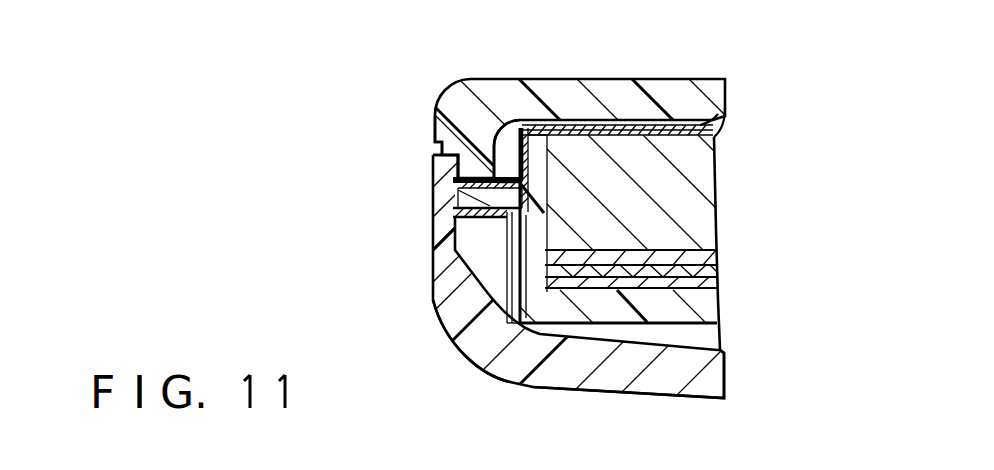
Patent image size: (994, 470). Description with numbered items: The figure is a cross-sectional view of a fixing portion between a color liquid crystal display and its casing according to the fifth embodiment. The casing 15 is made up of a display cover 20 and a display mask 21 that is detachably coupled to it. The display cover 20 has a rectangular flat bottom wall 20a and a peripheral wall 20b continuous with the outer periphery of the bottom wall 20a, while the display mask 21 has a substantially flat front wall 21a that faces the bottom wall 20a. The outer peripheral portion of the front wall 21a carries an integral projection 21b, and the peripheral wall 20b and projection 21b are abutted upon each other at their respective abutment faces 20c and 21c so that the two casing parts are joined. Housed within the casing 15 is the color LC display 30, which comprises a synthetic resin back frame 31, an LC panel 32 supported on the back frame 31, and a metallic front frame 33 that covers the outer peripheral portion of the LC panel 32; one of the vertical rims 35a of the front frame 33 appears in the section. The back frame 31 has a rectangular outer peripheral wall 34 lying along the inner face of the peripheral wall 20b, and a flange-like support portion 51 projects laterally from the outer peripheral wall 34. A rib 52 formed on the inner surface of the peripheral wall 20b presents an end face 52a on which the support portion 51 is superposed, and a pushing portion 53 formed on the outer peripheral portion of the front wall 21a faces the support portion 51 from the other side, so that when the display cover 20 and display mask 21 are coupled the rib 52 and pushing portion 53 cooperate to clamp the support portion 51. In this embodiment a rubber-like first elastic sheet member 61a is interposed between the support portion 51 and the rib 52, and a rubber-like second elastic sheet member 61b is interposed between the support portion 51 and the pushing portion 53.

The casing 15 is at (455, 360).
The display cover 20 is at (486, 300).
The bottom wall 20a is at (713, 378).
The peripheral wall 20b is at (440, 238).
The abutment face 20c is at (437, 168).
The display mask 21 is at (655, 79).
The front wall 21a is at (710, 95).
The projection 21b is at (455, 137).
The abutment face 21c is at (443, 143).
The color liquid crystal display 30 is at (708, 168).
The back frame 31 is at (711, 308).
The LC panel 32 is at (713, 222).
The front frame 33 is at (723, 112).
The outer peripheral wall 34 is at (508, 268).
The vertical rim 35a is at (563, 128).
The support portion 51 is at (462, 198).
The rib 52 is at (500, 250).
The end face 52a is at (478, 232).
The pushing portion 53 is at (480, 153).
The first elastic sheet member 61a is at (463, 213).
The second elastic sheet member 61b is at (462, 182).